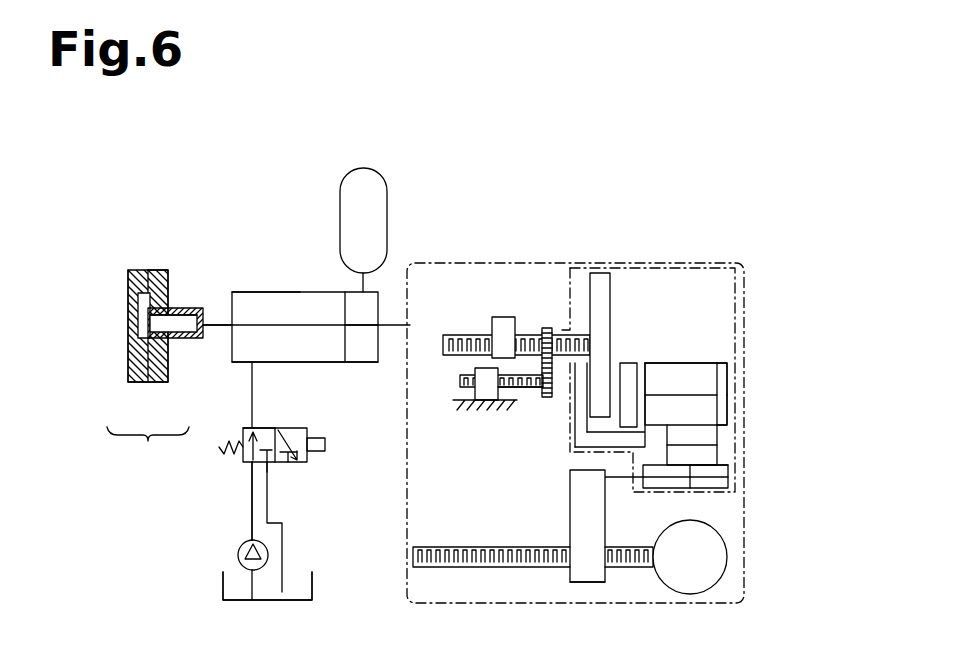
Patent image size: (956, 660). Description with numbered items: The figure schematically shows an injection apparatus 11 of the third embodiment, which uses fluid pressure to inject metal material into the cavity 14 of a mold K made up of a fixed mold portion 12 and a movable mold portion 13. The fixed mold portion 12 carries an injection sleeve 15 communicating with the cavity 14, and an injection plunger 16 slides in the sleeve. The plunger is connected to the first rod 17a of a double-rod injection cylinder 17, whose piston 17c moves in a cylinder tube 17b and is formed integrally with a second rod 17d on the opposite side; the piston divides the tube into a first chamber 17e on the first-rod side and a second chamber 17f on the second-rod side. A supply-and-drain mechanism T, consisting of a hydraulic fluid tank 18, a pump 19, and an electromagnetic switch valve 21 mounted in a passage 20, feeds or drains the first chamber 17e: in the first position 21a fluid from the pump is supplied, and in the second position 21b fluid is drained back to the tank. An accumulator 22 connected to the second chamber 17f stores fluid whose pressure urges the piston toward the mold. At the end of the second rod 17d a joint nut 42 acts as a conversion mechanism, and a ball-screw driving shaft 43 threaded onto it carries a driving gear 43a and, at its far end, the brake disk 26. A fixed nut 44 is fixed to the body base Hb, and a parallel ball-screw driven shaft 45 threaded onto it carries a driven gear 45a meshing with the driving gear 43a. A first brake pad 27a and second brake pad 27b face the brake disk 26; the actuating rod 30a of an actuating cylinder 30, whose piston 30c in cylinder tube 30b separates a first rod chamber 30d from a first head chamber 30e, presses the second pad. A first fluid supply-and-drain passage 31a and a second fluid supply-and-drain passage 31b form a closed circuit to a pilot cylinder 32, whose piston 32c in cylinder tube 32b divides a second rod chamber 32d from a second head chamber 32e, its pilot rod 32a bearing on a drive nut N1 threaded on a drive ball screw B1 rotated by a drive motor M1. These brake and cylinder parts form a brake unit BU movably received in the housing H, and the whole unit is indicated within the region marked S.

The injection apparatus 11 is at (435, 162).
The fixed mold portion 12 is at (163, 382).
The movable mold portion 13 is at (143, 382).
The cavity 14 is at (138, 318).
The injection sleeve 15 is at (183, 308).
The injection plunger 16 is at (207, 320).
The injection cylinder 17 is at (302, 292).
The first rod 17a is at (215, 335).
The cylinder tube 17b is at (275, 363).
The piston 17c is at (338, 343).
The second rod 17d is at (358, 352).
The first chamber 17e is at (250, 292).
The second chamber 17f is at (356, 365).
The hydraulic fluid tank 18 is at (312, 585).
The pump 19 is at (238, 553).
The passage 20 is at (252, 487).
The electromagnetic switch valve 21 is at (243, 462).
The first position 21a is at (250, 428).
The second position 21b is at (312, 452).
The accumulator 22 is at (376, 170).
The brake disk 26 is at (612, 290).
The first brake pad 27a is at (575, 416).
The second brake pad 27b is at (580, 438).
The actuating cylinder 30 is at (728, 366).
The actuating rod 30a is at (660, 392).
The cylinder tube 30b is at (730, 362).
The piston 30c is at (714, 372).
The first rod chamber 30d is at (673, 377).
The first head chamber 30e is at (720, 397).
The first fluid supply-and-drain passage 31a is at (667, 437).
The second fluid supply-and-drain passage 31b is at (720, 455).
The pilot cylinder 32 is at (728, 470).
The pilot rod 32a is at (624, 470).
The cylinder tube 32b is at (598, 480).
The piston 32c is at (697, 480).
The second rod chamber 32d is at (663, 478).
The second head chamber 32e is at (710, 480).
The joint nut 42 is at (500, 317).
The driving shaft 43 is at (450, 335).
The driving gear 43a is at (546, 328).
The fixed nut 44 is at (470, 401).
The driven shaft 45 is at (460, 381).
The driven gear 45a is at (500, 401).
The drive ball screw B1 is at (472, 567).
The housing H is at (505, 263).
The body base Hb is at (456, 401).
The mold K is at (148, 450).
The drive motor M1 is at (690, 595).
The drive nut N1 is at (589, 583).
The steering unit S is at (754, 250).
The supply-and-drain mechanism T is at (297, 500).
The brake unit BU is at (745, 290).